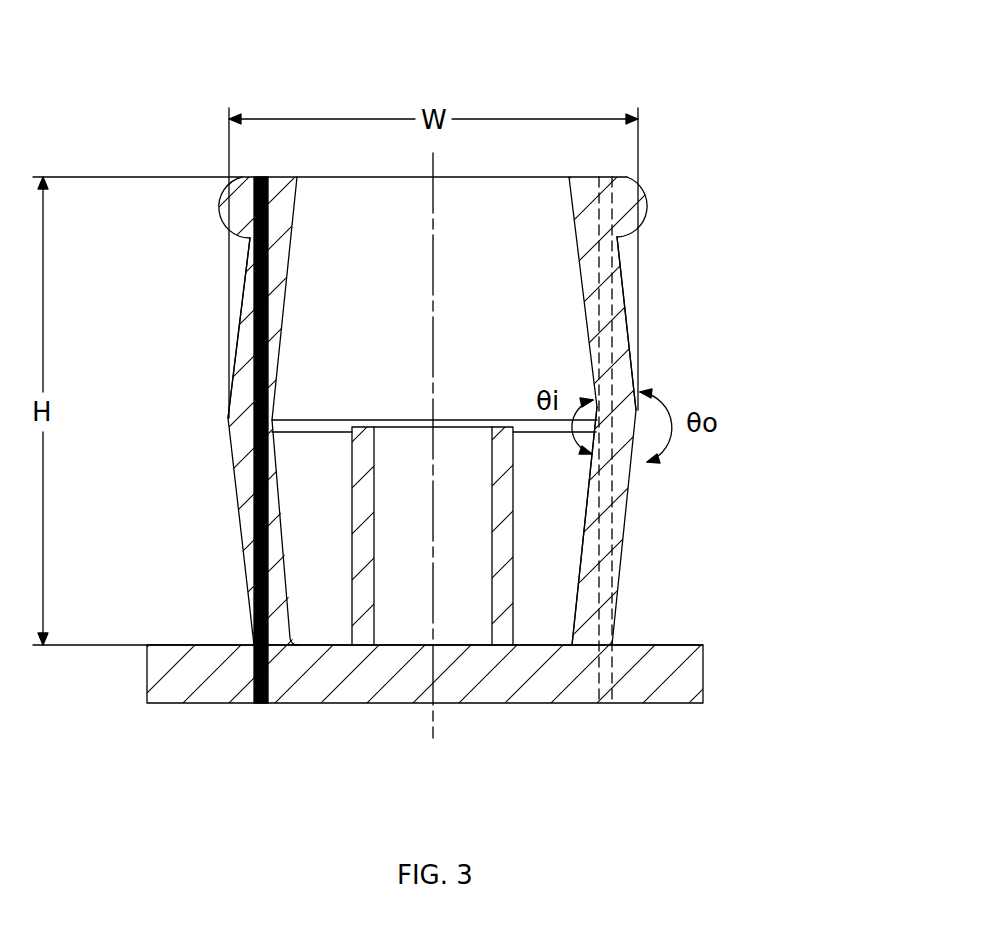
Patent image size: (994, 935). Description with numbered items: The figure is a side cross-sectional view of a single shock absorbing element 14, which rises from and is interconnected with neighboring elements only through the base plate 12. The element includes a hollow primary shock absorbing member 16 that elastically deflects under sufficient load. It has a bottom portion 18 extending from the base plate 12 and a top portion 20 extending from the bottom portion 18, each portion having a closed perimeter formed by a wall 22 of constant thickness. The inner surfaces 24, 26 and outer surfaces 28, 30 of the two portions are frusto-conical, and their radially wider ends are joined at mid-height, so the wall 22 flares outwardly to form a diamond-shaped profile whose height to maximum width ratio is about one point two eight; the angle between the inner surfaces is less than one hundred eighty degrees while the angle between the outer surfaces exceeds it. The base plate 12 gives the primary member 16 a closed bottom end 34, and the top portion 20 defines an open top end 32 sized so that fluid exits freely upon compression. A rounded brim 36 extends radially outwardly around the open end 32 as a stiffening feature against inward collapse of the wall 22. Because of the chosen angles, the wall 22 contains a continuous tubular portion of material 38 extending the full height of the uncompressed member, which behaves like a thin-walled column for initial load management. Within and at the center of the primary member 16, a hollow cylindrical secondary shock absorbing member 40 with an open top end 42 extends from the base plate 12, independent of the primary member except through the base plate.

The base plate 12 is at (690, 680).
The shock absorbing element 14 is at (708, 165).
The hollow primary shock absorbing member 16 is at (632, 333).
The bottom portion 18 is at (626, 523).
The top portion 20 is at (624, 304).
The wall 22 is at (637, 377).
The inner surface of the bottom portion 24 is at (578, 568).
The inner surface of the top portion 26 is at (530, 300).
The outer surface of the bottom portion 28 is at (245, 520).
The outer surface of the top portion 30 is at (238, 332).
The open top end 32 is at (340, 210).
The closed bottom end 34 is at (337, 645).
The brim 36 is at (222, 185).
The continuous tubular portion of material 38 is at (253, 678).
The secondary shock absorbing member 40 is at (350, 492).
The open top end of the secondary member 42 is at (415, 467).